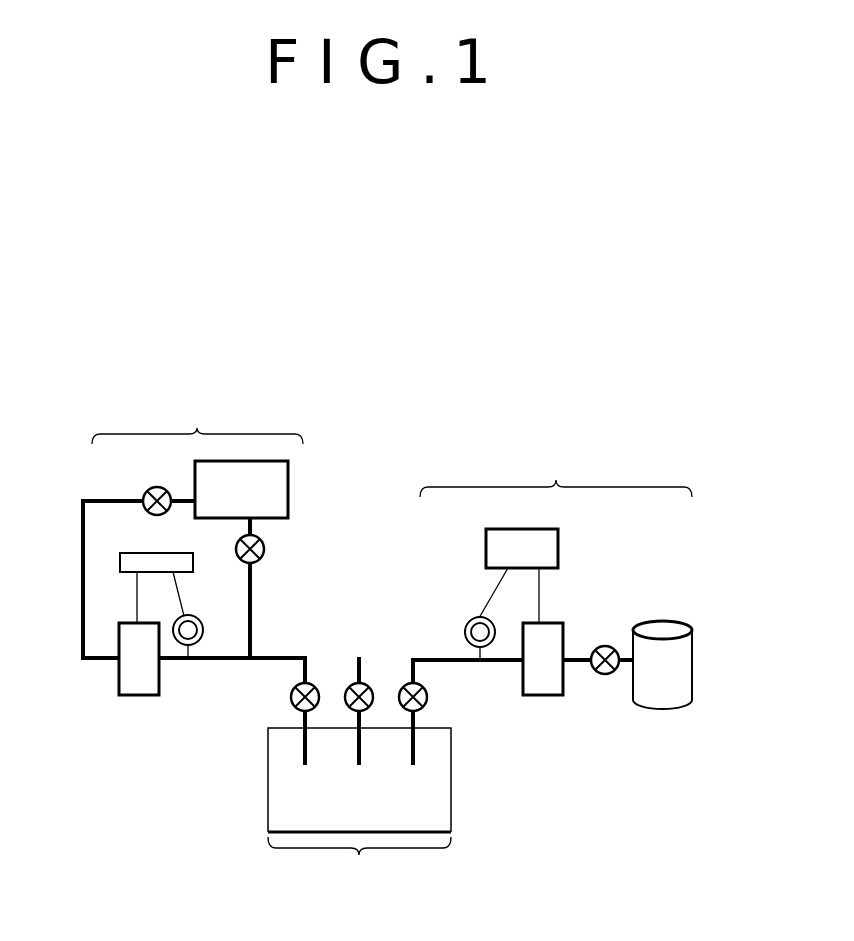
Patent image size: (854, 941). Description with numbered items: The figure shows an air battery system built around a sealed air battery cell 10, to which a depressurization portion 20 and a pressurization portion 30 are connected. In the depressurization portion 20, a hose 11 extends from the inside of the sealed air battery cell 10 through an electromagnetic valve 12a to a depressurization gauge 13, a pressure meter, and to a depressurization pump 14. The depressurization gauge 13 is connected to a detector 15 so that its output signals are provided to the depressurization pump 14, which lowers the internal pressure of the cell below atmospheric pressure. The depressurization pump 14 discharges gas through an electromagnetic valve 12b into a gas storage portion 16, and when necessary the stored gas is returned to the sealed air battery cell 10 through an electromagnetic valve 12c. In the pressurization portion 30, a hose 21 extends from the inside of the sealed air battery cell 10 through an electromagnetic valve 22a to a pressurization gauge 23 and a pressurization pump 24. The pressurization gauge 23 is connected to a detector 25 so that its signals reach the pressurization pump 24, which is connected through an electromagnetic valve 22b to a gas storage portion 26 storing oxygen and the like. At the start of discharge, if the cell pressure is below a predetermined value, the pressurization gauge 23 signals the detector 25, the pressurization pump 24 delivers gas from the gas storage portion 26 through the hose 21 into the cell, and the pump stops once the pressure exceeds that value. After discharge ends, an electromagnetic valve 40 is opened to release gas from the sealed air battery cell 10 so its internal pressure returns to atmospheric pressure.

The sealed air battery cell 10 is at (359, 808).
The hose 11 is at (303, 750).
The electromagnetic valve 12a is at (291, 697).
The electromagnetic valve 12b is at (143, 496).
The electromagnetic valve 12c is at (262, 547).
The depressurization gauge 13 is at (197, 630).
The depressurization pump 14 is at (137, 683).
The detector 15 is at (150, 556).
The gas storage portion 16 is at (272, 489).
The depressurization portion 20 is at (197, 421).
The hose 21 is at (417, 747).
The electromagnetic valve 22a is at (427, 697).
The electromagnetic valve 22b is at (606, 671).
The pressurization gauge 23 is at (465, 632).
The pressurization pump 24 is at (543, 687).
The detector 25 is at (552, 548).
The gas storage portion 26 is at (683, 665).
The pressurization portion 30 is at (556, 475).
The electromagnetic valve 40 is at (345, 690).